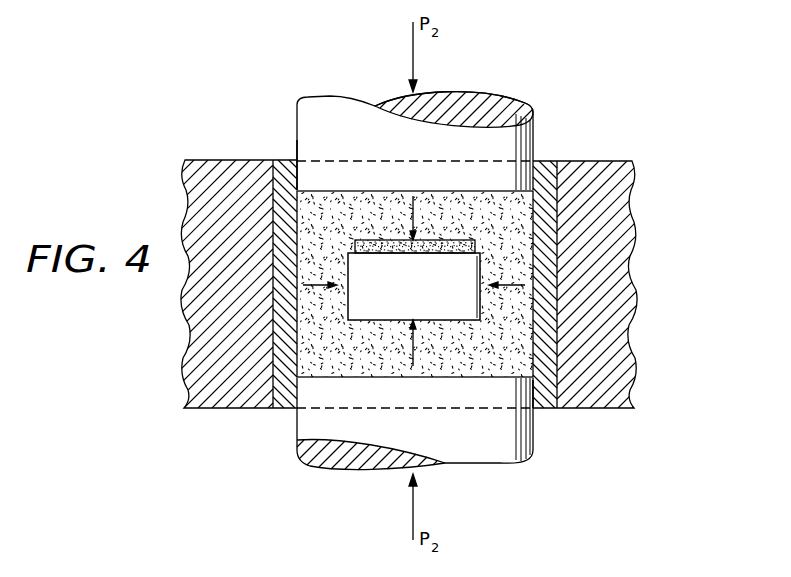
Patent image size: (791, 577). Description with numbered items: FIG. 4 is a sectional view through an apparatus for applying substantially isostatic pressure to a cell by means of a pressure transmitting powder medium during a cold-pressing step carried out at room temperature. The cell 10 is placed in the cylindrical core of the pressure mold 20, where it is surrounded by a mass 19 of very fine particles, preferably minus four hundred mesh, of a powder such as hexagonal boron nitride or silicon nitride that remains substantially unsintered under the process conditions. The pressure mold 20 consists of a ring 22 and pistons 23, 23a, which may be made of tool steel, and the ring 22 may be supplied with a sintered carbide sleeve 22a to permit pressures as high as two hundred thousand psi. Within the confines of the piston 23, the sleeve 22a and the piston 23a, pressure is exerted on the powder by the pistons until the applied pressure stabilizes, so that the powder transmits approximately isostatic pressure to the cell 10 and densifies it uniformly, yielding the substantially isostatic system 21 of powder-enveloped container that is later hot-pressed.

The cell 10 is at (346, 302).
The mass of very fine particles 19 is at (334, 200).
The pressure mold 20 is at (540, 152).
The substantially isostatic system 21 is at (517, 236).
The ring 22 is at (622, 228).
The sintered carbide sleeve 22a is at (550, 409).
The piston 23 is at (300, 417).
The piston 23a is at (297, 150).